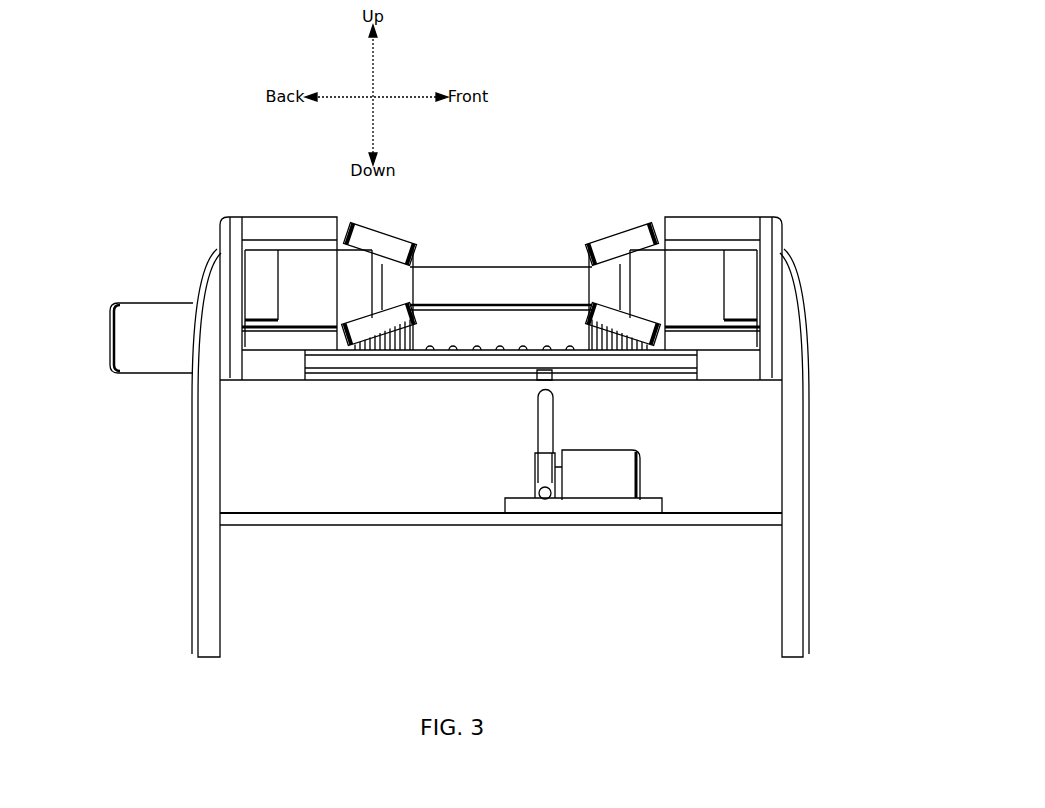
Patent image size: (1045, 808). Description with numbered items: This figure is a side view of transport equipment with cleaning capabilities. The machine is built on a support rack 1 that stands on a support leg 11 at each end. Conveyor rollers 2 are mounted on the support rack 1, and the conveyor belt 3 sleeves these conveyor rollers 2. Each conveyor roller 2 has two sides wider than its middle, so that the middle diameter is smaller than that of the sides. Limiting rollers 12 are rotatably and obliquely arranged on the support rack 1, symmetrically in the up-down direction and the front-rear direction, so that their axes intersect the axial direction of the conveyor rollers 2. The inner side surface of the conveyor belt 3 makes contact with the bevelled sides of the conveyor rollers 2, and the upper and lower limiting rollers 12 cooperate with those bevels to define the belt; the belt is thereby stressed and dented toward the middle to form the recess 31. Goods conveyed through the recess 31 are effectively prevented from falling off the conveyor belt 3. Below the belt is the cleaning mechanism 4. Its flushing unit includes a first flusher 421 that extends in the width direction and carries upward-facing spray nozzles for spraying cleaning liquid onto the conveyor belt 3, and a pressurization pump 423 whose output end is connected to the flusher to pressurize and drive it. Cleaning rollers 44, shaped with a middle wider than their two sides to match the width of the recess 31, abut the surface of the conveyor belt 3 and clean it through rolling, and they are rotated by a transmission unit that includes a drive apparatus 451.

The support rack 1 is at (203, 250).
The support leg 11 is at (192, 563).
The conveyor roller 2 is at (260, 247).
The conveyor belt 3 is at (305, 240).
The limiting roller 12 is at (383, 323).
The cleaning roller 44 is at (523, 320).
The recess 31 is at (497, 262).
The cleaning mechanism 4 is at (292, 430).
The first flusher 421 is at (443, 360).
The pressurization pump 423 is at (597, 485).
The drive apparatus 451 is at (153, 340).